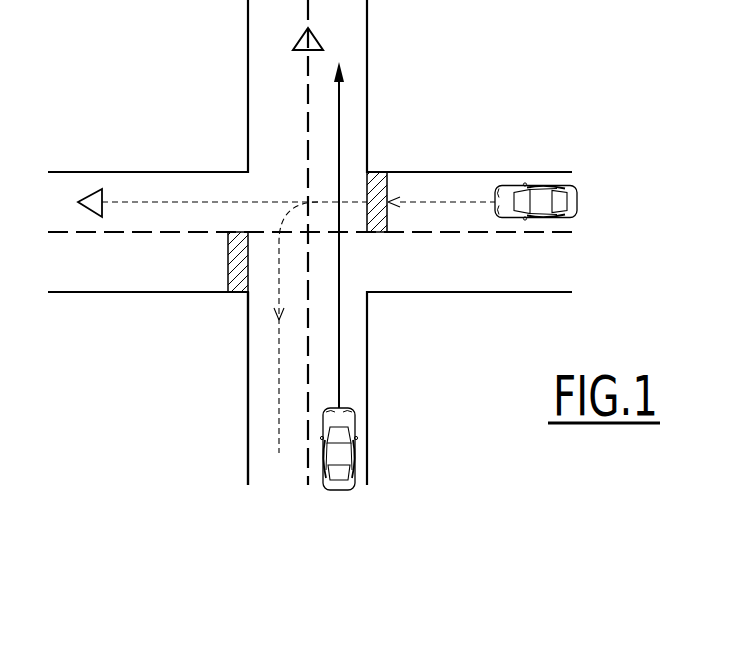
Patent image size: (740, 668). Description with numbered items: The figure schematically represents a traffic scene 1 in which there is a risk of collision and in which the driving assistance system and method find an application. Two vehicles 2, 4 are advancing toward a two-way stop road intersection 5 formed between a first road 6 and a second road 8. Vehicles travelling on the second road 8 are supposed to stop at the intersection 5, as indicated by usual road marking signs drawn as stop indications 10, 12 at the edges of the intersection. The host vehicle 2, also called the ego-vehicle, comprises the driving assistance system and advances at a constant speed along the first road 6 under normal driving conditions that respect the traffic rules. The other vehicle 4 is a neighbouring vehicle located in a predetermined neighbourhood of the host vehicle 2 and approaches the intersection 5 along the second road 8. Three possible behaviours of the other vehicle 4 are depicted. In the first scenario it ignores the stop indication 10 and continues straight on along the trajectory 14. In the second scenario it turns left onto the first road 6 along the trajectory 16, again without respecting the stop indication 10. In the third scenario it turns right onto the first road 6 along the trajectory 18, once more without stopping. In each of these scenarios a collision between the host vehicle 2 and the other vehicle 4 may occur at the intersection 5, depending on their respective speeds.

The traffic scene 1 is at (135, 318).
The host vehicle 2 is at (343, 448).
The other vehicle 4 is at (538, 197).
The road intersection 5 is at (273, 190).
The first road 6 is at (248, 428).
The second road 8 is at (436, 180).
The stop indication 10 is at (378, 182).
The stop indication 12 is at (228, 269).
The trajectory 14 is at (137, 202).
The trajectory 16 is at (280, 341).
The trajectory 18 is at (310, 31).